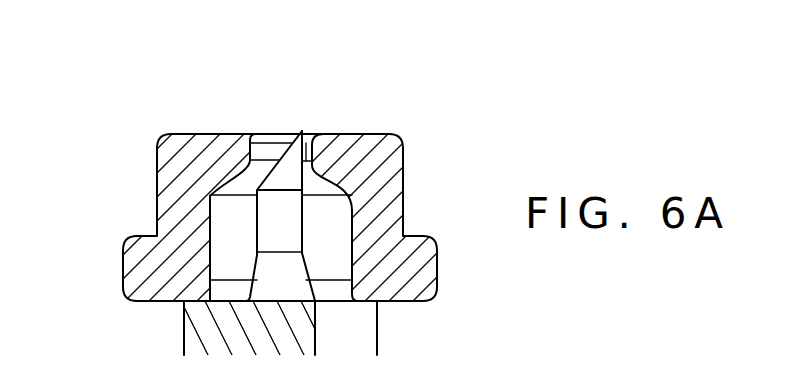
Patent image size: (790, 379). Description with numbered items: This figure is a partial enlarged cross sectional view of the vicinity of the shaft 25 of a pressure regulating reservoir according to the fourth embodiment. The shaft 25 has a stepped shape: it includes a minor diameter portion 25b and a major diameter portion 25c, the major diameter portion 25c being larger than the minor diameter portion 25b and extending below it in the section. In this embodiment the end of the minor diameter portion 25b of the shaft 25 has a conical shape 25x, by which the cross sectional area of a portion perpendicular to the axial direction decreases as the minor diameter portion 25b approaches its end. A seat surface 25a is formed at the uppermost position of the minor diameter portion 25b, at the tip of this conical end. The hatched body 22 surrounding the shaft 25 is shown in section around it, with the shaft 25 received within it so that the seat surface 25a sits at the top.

The nut body 22 is at (172, 148).
The shaft 25 is at (255, 263).
The seat surface 25a is at (296, 140).
The minor diameter portion 25b is at (265, 236).
The major diameter portion 25c is at (198, 350).
The conical shape 25x is at (289, 169).